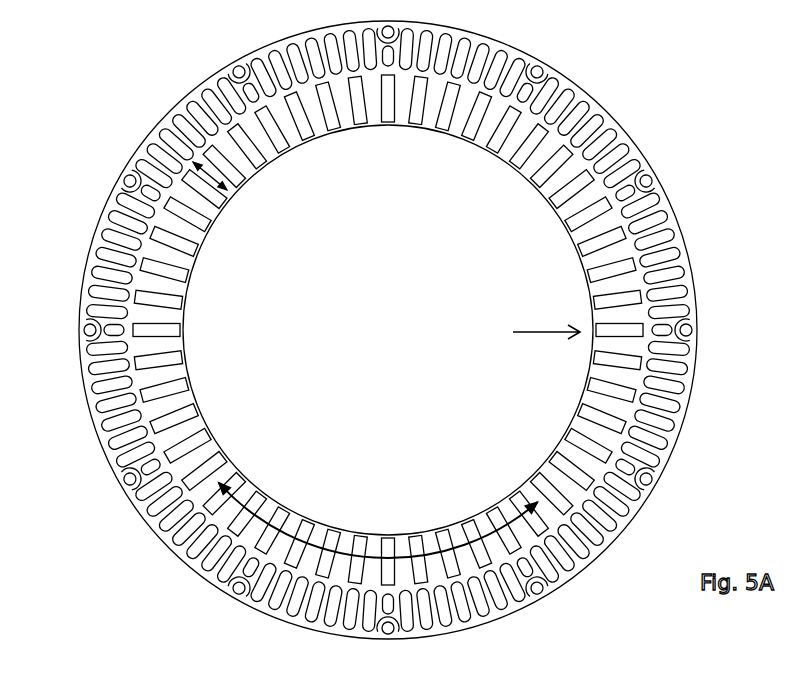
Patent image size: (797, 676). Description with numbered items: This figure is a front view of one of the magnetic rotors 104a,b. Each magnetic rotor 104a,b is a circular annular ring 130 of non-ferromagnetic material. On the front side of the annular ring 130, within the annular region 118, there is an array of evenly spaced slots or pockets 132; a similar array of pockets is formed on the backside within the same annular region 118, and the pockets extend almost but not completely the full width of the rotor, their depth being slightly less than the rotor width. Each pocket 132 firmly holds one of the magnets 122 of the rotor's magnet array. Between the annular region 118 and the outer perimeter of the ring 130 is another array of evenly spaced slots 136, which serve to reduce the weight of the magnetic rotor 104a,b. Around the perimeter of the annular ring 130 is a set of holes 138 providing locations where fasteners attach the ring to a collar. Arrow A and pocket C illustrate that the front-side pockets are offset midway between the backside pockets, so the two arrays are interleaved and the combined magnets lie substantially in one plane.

The magnetic rotors 104a,b is at (105, 512).
The annular ring 130 is at (665, 458).
The magnets 122 is at (560, 195).
The slots or pockets 132 is at (393, 82).
The slots 136 is at (185, 127).
The holes 138 is at (232, 63).
The annular region 118 is at (207, 175).